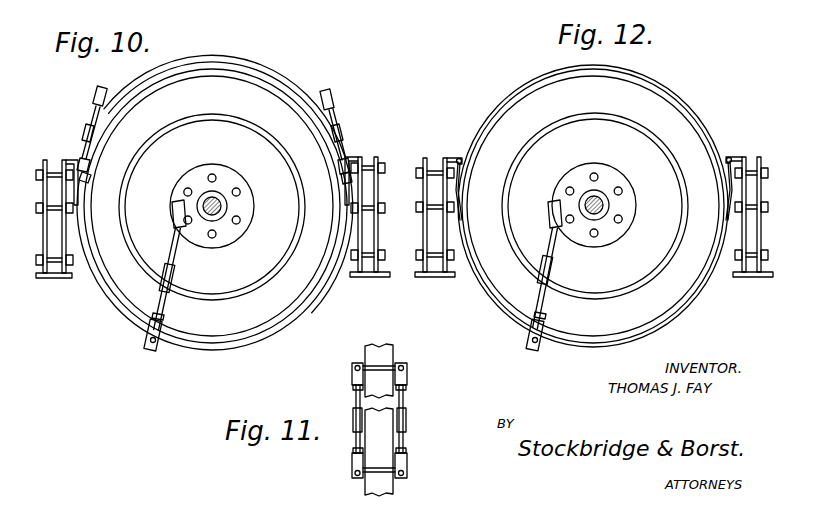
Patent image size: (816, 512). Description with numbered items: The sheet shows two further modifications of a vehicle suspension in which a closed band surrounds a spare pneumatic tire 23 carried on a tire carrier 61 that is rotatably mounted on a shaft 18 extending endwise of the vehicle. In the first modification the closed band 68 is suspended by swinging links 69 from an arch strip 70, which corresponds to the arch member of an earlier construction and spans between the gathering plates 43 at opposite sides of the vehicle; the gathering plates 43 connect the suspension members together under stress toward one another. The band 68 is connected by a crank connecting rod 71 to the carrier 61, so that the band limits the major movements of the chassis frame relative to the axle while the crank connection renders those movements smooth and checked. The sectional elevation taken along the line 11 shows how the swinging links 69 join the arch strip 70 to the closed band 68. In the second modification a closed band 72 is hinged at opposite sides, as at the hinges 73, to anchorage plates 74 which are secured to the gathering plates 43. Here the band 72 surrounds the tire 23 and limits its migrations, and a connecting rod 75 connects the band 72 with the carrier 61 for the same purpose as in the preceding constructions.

In FIG. 10, the section line 11 is at (90, 88).
In FIG. 10, the shaft 18 is at (220, 198).
In FIG. 10, the pneumatic tire 23 is at (258, 105).
In FIG. 12, the pneumatic tire 23 is at (645, 96).
In FIG. 10, the gathering plates 43 is at (60, 237).
In FIG. 12, the gathering plates 43 is at (752, 241).
In FIG. 10, the tire carrier 61 is at (288, 186).
In FIG. 12, the tire carrier 61 is at (672, 186).
In FIG. 10, the closed band 68 is at (125, 312).
In FIG. 11, the closed band 68 is at (386, 458).
In FIG. 10, the swinging links 69 is at (332, 140).
In FIG. 11, the swinging links 69 is at (362, 418).
In FIG. 10, the arch strip 70 is at (262, 63).
In FIG. 11, the arch strip 70 is at (386, 356).
In FIG. 10, the crank connecting rod 71 is at (172, 264).
In FIG. 12, the closed band 72 is at (518, 90).
In FIG. 12, the hinge 73 is at (459, 156).
In FIG. 12, the anchorage plates 74 is at (456, 156).
In FIG. 12, the connecting rod 75 is at (548, 268).